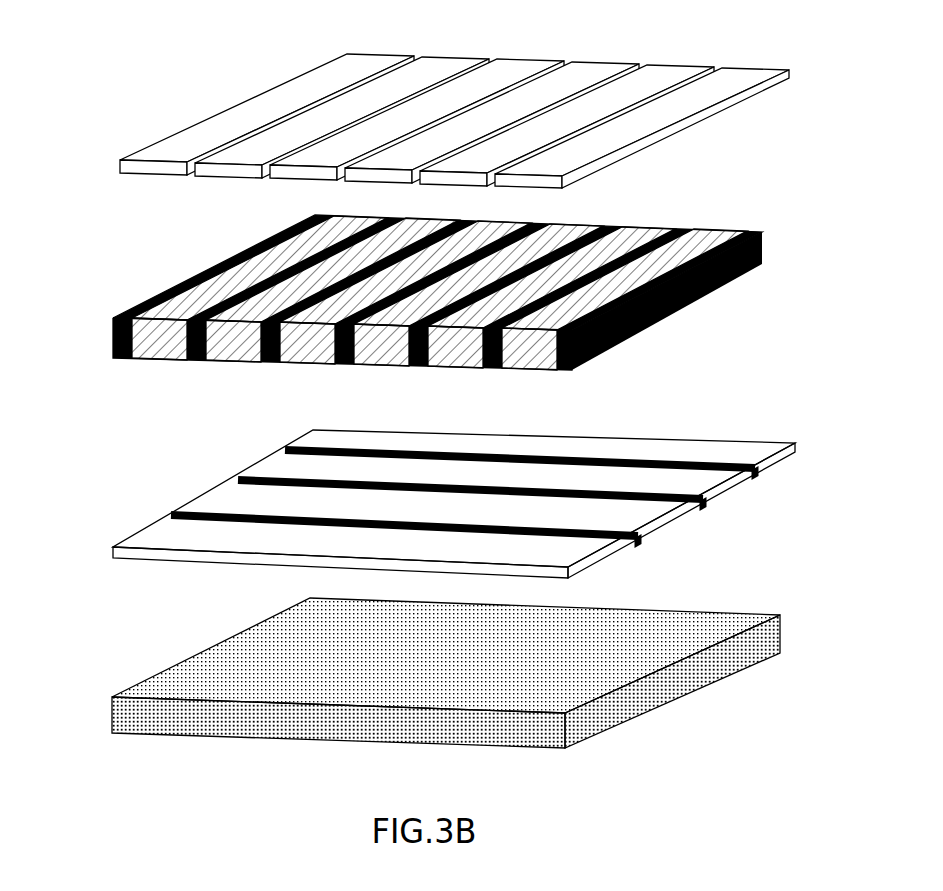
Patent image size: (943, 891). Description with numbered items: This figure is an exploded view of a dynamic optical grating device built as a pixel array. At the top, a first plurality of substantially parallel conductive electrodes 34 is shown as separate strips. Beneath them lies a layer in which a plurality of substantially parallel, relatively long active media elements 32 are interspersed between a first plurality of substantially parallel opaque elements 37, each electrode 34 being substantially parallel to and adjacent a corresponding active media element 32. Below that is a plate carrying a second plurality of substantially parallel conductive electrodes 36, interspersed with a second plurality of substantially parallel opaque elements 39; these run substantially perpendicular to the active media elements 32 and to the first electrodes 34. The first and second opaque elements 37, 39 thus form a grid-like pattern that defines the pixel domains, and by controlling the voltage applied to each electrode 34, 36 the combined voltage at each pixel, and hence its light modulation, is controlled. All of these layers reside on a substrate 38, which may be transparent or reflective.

The first plurality of conductive electrodes 34 is at (466, 96).
The active media elements 32 is at (452, 267).
The first plurality of opaque elements 37 is at (388, 314).
The second plurality of conductive electrodes 36 is at (492, 504).
The second plurality of opaque elements 39 is at (486, 513).
The substrate 38 is at (491, 673).